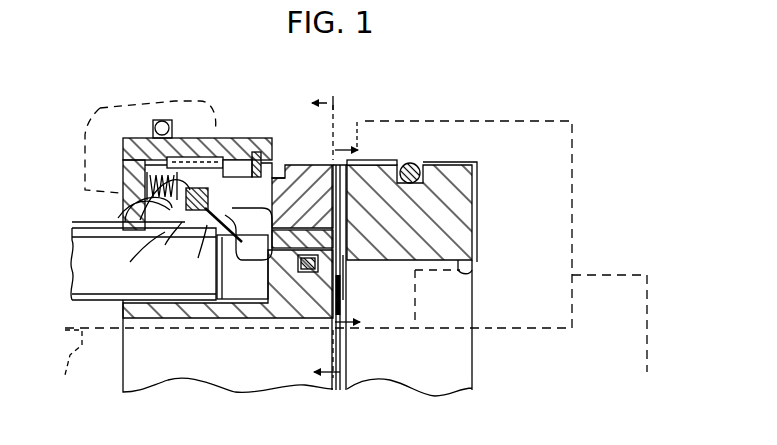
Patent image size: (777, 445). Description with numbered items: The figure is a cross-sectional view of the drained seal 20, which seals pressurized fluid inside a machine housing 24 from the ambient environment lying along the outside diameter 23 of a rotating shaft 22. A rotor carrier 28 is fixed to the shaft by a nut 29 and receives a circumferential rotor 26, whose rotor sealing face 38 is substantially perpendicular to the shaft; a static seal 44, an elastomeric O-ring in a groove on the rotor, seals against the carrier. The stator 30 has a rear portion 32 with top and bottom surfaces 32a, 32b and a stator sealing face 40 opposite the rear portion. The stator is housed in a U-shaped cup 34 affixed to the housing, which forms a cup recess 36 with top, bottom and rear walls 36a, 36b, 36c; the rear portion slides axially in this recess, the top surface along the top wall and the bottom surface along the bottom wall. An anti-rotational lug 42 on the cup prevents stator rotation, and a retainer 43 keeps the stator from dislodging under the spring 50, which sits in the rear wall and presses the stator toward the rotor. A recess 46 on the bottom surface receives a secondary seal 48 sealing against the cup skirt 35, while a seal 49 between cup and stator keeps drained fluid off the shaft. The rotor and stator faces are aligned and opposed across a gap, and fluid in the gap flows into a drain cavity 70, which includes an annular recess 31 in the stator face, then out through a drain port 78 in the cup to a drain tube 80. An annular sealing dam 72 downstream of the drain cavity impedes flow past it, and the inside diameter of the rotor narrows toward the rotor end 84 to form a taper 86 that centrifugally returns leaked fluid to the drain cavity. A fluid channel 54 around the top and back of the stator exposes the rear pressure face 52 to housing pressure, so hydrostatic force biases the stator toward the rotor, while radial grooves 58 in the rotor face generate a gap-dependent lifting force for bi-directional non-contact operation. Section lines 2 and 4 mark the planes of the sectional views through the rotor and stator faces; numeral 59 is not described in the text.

The section line 2- 2 is at (357, 145).
The section line 4- 4 is at (319, 226).
The drained seal 20 is at (508, 68).
The rotating shaft 22 is at (647, 327).
The outside diameter of shaft 23 is at (62, 355).
The machine housing 24 is at (102, 105).
The rotor 26 is at (475, 235).
The rotor carrier 28 is at (572, 190).
The nut 29 is at (475, 330).
The stator 30 is at (335, 165).
The annular recess 31 is at (345, 262).
The rear portion of stator 32 is at (248, 234).
The top surface of rear portion 32a is at (232, 140).
The bottom surface of rear portion 32b is at (325, 235).
The U-shaped cup 34 is at (232, 130).
The cup skirt 35 is at (194, 251).
The cup recess 36 is at (145, 209).
The top wall of cup recess 36a is at (178, 193).
The bottom wall of cup recess 36b is at (143, 264).
The rear wall of cup recess 36c is at (115, 218).
The rotor sealing face 38 is at (345, 222).
The stator sealing face 40 is at (325, 208).
The anti-rotational lug 42 is at (125, 152).
The retainer 43 is at (262, 170).
The static seal 44 is at (418, 164).
The recess 46 is at (166, 243).
The secondary seal 48 is at (252, 252).
The seal 49 is at (320, 262).
The spring 50 is at (125, 200).
The rear pressure face 52 is at (209, 193).
The fluid channel 54 is at (124, 168).
The radial grooves 58 is at (366, 164).
The cam surface 59 is at (135, 247).
The drain cavity 70 is at (345, 225).
The annular sealing dam 72 is at (345, 240).
The drain port 78 is at (253, 318).
The drain tube 80 is at (72, 302).
The rotor end 84 is at (478, 213).
The taper 86 is at (472, 275).